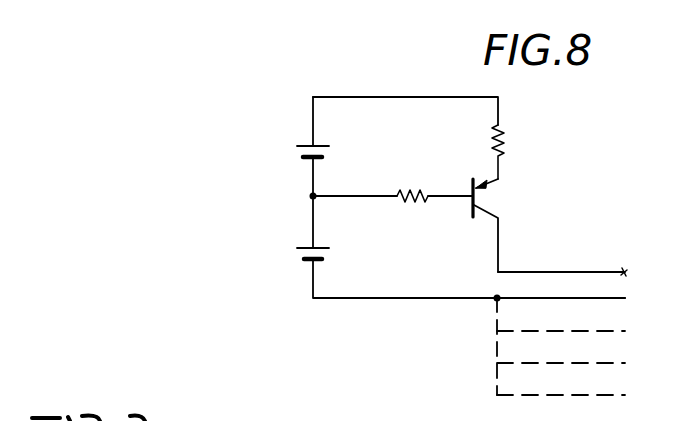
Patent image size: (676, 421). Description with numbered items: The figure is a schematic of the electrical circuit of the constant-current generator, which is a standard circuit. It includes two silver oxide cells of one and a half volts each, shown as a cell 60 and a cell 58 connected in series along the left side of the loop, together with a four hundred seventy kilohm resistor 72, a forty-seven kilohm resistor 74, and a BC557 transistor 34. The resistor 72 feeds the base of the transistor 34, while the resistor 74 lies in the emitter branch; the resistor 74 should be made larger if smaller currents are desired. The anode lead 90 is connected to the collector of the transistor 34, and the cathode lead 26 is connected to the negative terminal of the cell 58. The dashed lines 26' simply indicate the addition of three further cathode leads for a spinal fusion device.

The battery (bias voltage source) 60 is at (301, 148).
The cell 58 is at (297, 250).
The resistor 72 is at (424, 191).
The resistor 74 is at (505, 142).
The transistor 34 is at (489, 199).
The anode lead 90 is at (591, 268).
The cathode lead 26 is at (552, 296).
The dashed lines 26' is at (569, 346).